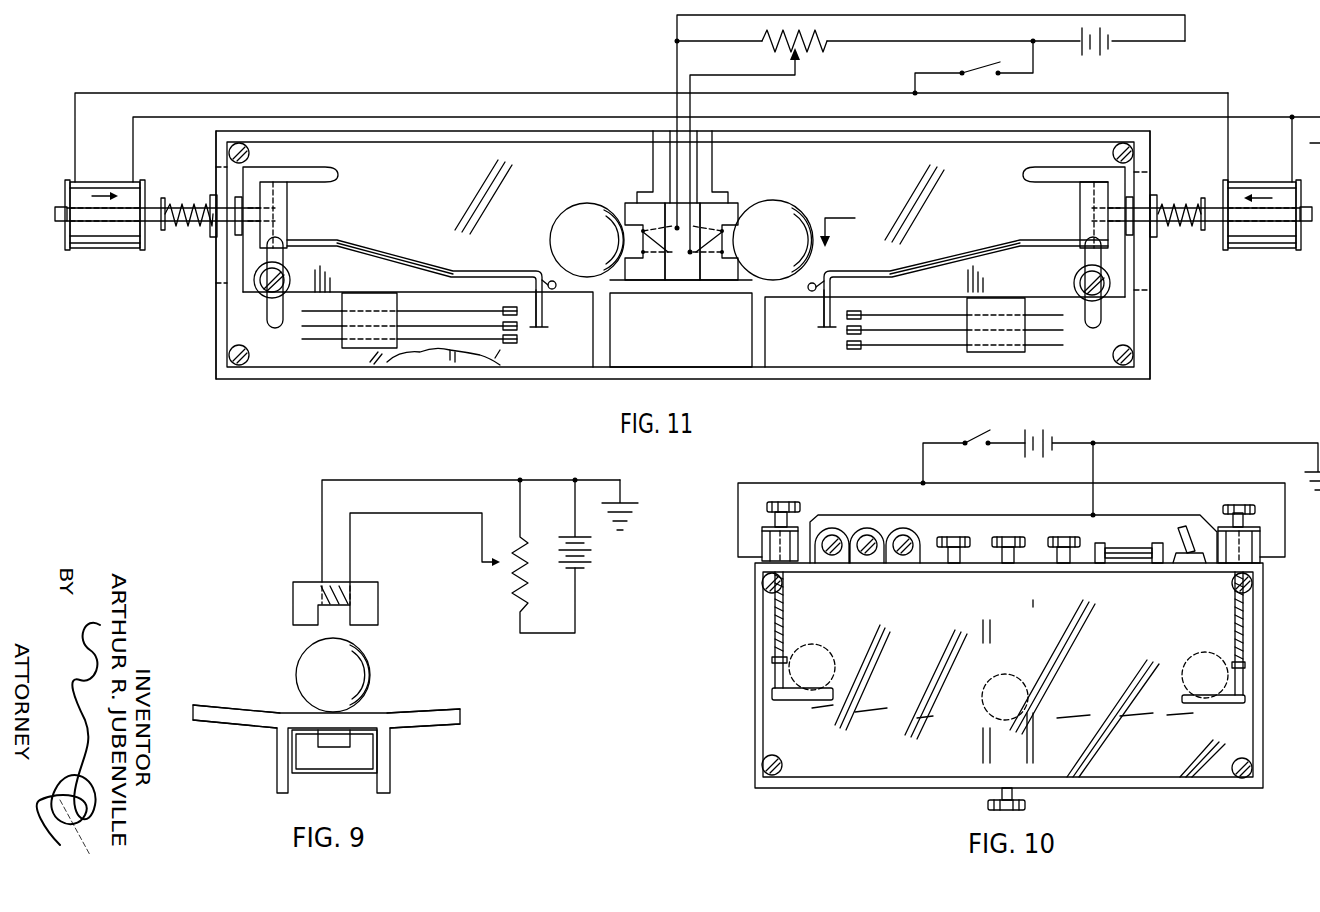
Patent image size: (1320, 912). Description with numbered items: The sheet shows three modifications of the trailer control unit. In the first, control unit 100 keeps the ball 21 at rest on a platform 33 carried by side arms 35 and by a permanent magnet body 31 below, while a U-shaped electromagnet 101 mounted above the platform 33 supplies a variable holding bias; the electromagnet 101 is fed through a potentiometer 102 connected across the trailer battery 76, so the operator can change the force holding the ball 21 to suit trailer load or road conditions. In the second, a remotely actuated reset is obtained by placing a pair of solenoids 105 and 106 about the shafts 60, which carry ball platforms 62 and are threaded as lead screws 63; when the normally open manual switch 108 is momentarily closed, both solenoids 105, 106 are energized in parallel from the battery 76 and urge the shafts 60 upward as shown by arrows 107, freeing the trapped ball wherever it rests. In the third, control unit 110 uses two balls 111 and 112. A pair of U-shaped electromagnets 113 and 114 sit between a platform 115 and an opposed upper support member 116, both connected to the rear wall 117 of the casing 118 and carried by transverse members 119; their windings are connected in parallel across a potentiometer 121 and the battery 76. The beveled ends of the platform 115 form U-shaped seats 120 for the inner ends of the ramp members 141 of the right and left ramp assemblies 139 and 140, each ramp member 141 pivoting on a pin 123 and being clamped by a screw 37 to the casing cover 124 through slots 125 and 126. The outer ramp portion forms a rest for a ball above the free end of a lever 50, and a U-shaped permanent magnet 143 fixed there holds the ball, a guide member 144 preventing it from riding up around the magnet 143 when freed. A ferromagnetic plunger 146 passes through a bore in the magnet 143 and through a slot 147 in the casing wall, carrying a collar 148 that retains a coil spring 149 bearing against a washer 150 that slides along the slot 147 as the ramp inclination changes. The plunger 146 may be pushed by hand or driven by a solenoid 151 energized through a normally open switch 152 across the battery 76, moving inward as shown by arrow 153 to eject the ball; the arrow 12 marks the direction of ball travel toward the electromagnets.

In FIG. 11, the direction of ball travel 12 is at (837, 235).
In FIG. 9, the ball 21 is at (365, 660).
In FIG. 9, the permanent magnet 31 is at (388, 773).
In FIG. 9, the platform 33 is at (373, 712).
In FIG. 9, the arms 35 is at (247, 708).
In FIG. 11, the screw 37 is at (267, 295).
In FIG. 11, the lever 50 is at (440, 267).
In FIG. 10, the shafts 60 is at (797, 636).
In FIG. 10, the platform 62 is at (780, 700).
In FIG. 10, the lead screw 63 is at (772, 615).
In FIG. 11, the trailer battery 76 is at (1098, 57).
In FIG. 9, the trailer battery 76 is at (593, 548).
In FIG. 10, the trailer battery 76 is at (1052, 433).
In FIG. 9, the control unit 100 is at (273, 657).
In FIG. 9, the electromagnet 101 is at (367, 593).
In FIG. 9, the potentiometer 102 is at (505, 582).
In FIG. 10, the solenoid 105 is at (1225, 550).
In FIG. 10, the solenoid 106 is at (806, 553).
In FIG. 10, the arrows 107 is at (795, 599).
In FIG. 10, the manual switch 108 is at (967, 442).
In FIG. 11, the control unit 110 is at (540, 387).
In FIG. 11, the ball 111 is at (798, 217).
In FIG. 11, the ball 112 is at (570, 220).
In FIG. 11, the electromagnet 113 is at (730, 213).
In FIG. 11, the electromagnet 114 is at (637, 200).
In FIG. 11, the platform 115 is at (667, 288).
In FIG. 11, the upper support member 116 is at (723, 192).
In FIG. 11, the rear wall 117 is at (427, 355).
In FIG. 11, the casing 118 is at (215, 347).
In FIG. 11, the transverse members 119 is at (653, 166).
In FIG. 11, the U-shaped seat 120 is at (550, 295).
In FIG. 11, the potentiometer 121 is at (820, 50).
In FIG. 11, the pin 123 is at (552, 280).
In FIG. 11, the casing cover 124 is at (322, 355).
In FIG. 11, the slot 125 is at (1093, 335).
In FIG. 11, the slot 126 is at (272, 328).
In FIG. 11, the ramp assembly 139 is at (1007, 237).
In FIG. 11, the ramp assembly 140 is at (375, 236).
In FIG. 11, the ramp member 141 is at (405, 278).
In FIG. 11, the magnet 143 is at (280, 203).
In FIG. 11, the guide member 144 is at (328, 165).
In FIG. 11, the plunger 146 is at (57, 220).
In FIG. 11, the slot 147 is at (215, 262).
In FIG. 11, the collar 148 is at (163, 206).
In FIG. 11, the coil spring 149 is at (187, 222).
In FIG. 11, the washer 150 is at (210, 235).
In FIG. 11, the solenoid 151 is at (93, 242).
In FIG. 11, the switch 152 is at (975, 62).
In FIG. 11, the arrow 153 is at (1257, 198).